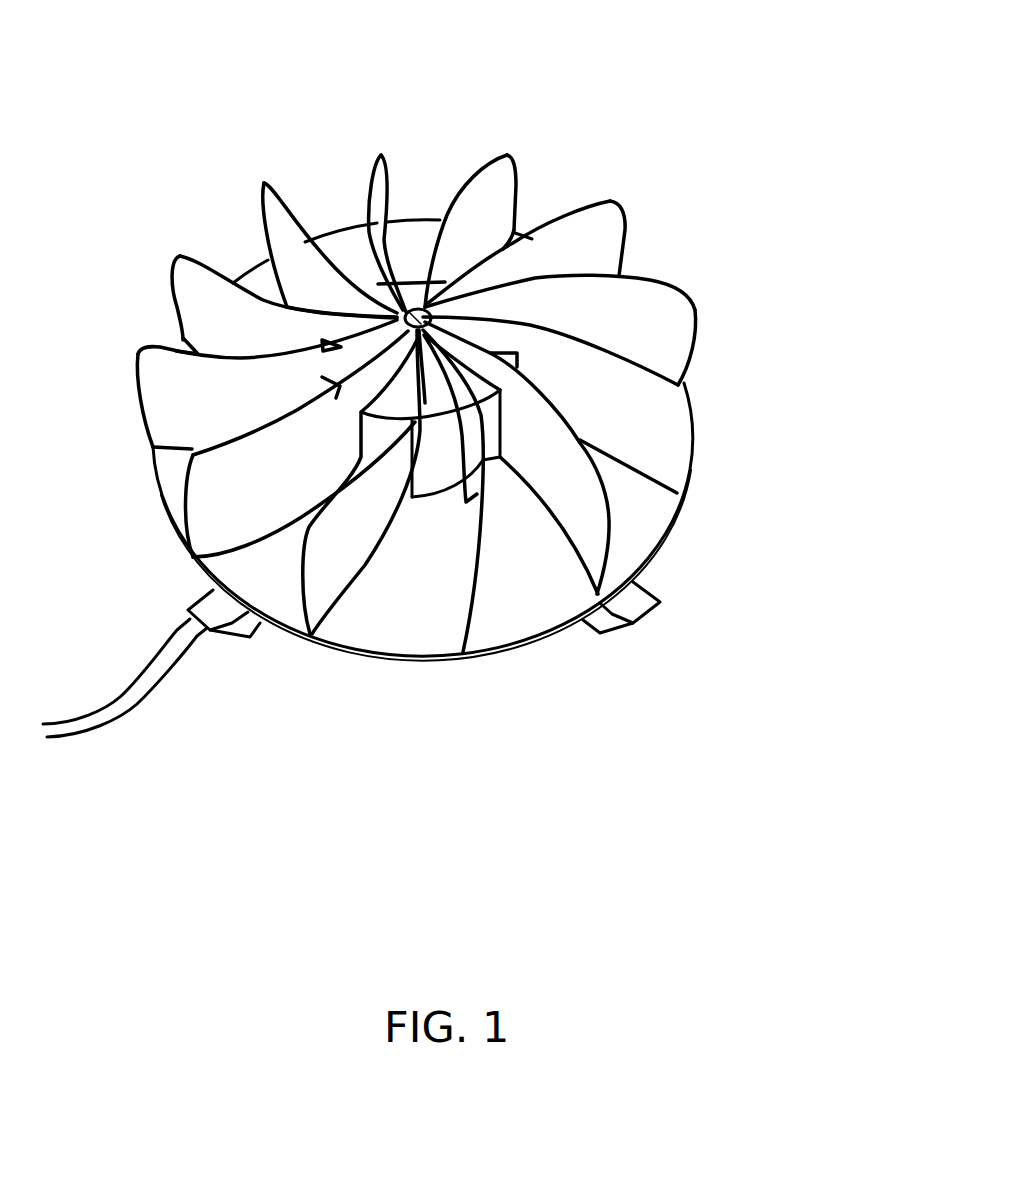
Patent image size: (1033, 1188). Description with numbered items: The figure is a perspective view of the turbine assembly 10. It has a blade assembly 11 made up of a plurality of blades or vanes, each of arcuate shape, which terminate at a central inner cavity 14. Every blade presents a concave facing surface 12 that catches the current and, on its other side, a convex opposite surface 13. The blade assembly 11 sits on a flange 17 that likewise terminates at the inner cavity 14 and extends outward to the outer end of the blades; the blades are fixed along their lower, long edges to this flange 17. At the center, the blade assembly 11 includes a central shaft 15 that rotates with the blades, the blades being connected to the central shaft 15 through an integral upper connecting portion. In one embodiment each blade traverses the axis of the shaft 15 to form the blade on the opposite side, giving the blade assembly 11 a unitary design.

The turbine assembly 10 is at (597, 148).
The blade assembly 11 is at (665, 308).
The concave facing surface 12 is at (664, 437).
The convex opposite surface 13 is at (275, 233).
The inner cavity 14 is at (406, 303).
The central shaft 15 is at (406, 312).
The flange 17 is at (428, 616).